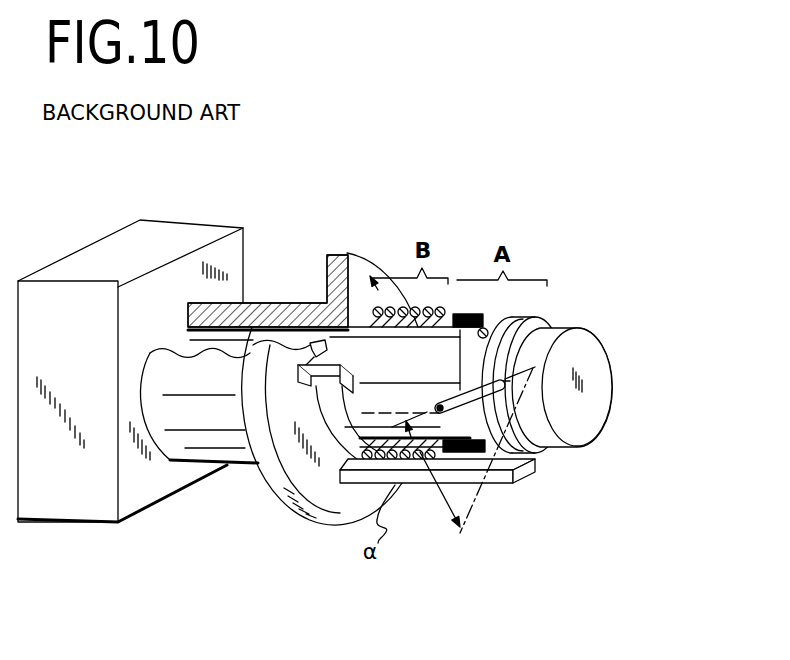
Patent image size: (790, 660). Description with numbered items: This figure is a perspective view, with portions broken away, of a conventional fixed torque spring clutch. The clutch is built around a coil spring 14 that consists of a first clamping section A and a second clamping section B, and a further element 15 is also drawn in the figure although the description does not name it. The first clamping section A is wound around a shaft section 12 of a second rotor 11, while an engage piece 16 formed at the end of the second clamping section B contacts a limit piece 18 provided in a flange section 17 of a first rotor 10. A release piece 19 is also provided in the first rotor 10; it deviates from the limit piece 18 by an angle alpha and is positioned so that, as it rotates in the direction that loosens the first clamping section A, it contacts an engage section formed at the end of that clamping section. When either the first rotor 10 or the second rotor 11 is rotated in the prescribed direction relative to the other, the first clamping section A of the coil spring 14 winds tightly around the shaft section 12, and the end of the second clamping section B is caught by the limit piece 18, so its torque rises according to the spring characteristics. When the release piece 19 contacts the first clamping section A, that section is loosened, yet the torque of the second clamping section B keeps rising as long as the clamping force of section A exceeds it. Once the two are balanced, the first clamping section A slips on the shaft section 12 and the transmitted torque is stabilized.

The first rotor 10 is at (213, 470).
The second rotor 11 is at (257, 266).
The shaft section 12 is at (600, 382).
The coil spring 14 is at (423, 470).
The coil spring 15 is at (460, 327).
The engage piece 16 is at (318, 325).
The flange section 17 is at (331, 498).
The limit piece 18 is at (318, 387).
The release piece 19 is at (521, 485).